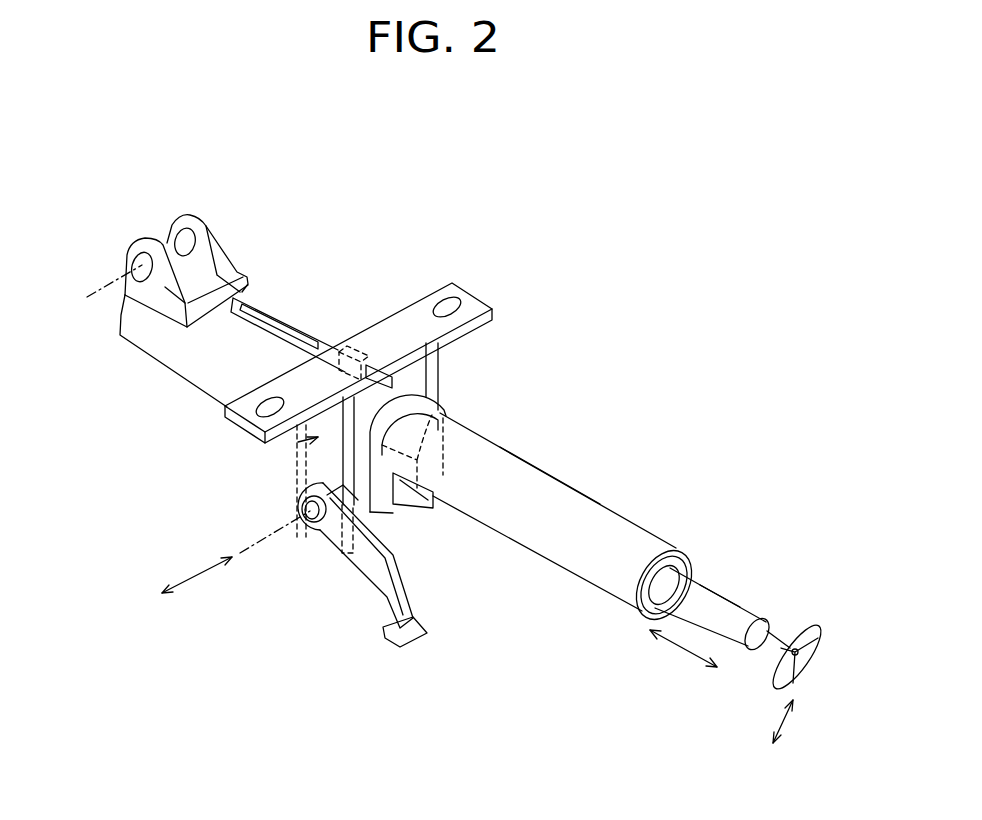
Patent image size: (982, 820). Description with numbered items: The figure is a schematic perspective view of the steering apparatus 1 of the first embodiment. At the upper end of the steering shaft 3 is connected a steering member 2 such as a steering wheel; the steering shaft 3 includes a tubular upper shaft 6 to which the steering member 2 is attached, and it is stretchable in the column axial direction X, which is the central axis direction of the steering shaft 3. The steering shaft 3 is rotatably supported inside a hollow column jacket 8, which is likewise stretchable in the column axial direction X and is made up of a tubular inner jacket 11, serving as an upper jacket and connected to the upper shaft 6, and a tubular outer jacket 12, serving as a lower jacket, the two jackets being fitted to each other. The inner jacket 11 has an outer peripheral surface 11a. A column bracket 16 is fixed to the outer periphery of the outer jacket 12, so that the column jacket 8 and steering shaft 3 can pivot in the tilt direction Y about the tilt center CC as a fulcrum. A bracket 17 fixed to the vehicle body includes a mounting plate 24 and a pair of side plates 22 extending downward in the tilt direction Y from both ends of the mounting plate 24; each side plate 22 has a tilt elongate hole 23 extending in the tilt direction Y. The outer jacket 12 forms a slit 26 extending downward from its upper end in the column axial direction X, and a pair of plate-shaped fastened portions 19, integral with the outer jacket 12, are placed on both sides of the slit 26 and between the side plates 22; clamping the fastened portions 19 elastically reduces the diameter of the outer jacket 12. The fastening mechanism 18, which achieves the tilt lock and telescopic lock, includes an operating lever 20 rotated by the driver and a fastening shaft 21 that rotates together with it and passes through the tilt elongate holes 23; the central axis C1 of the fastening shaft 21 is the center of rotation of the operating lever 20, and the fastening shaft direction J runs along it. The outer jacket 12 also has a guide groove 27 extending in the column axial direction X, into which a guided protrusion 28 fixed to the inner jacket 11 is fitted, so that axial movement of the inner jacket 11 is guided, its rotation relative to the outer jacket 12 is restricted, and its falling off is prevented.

The steering apparatus 1 is at (779, 562).
The steering member 2 is at (813, 627).
The steering shaft 3 is at (705, 583).
The upper shaft 6 is at (737, 607).
The column jacket 8 is at (660, 530).
The inner jacket 11 is at (620, 518).
The outer peripheral surface 11a is at (567, 500).
The outer jacket 12 is at (196, 366).
The column bracket 16 is at (213, 248).
The bracket 17 is at (296, 443).
The fastening mechanism 18 is at (353, 570).
The fastened portions 19 is at (433, 467).
The operating lever 20 is at (413, 600).
The fastening shaft 21 is at (307, 514).
The side plates 22 is at (441, 367).
The tilt elongate holes 23 is at (328, 542).
The mounting plate 24 is at (410, 312).
The slit 26 is at (400, 506).
The guide groove 27 is at (272, 322).
The guided protrusion 28 is at (343, 346).
The tilt center CC is at (98, 283).
The central axis C1 is at (250, 543).
The fastening shaft direction J is at (198, 580).
The column axial direction X is at (681, 650).
The tilt direction Y is at (791, 717).